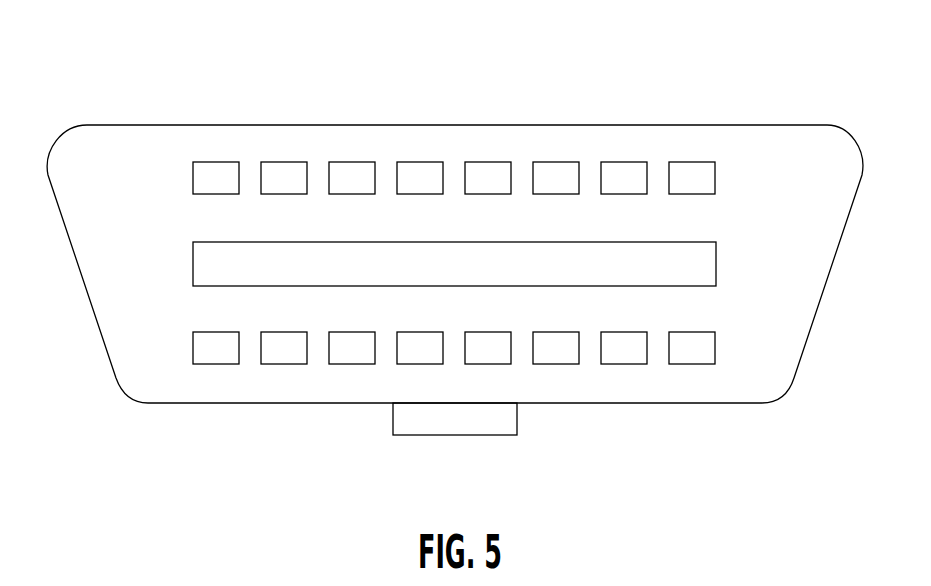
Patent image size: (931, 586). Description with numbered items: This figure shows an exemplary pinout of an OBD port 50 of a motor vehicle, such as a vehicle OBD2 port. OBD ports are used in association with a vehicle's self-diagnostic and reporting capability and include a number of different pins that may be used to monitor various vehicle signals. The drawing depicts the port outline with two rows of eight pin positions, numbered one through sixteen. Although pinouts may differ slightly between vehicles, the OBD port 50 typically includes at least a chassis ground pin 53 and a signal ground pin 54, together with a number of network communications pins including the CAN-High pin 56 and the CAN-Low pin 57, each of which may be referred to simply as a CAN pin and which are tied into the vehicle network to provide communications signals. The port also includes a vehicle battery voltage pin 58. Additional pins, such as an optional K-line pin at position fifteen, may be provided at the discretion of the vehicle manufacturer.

The OBD port 50 is at (448, 251).
The chassis ground pin 53 is at (409, 165).
The signal ground pin 54 is at (477, 165).
The CAN-High pin 56 is at (548, 165).
The CAN-Low pin 57 is at (563, 360).
The vehicle battery voltage pin 58 is at (694, 372).